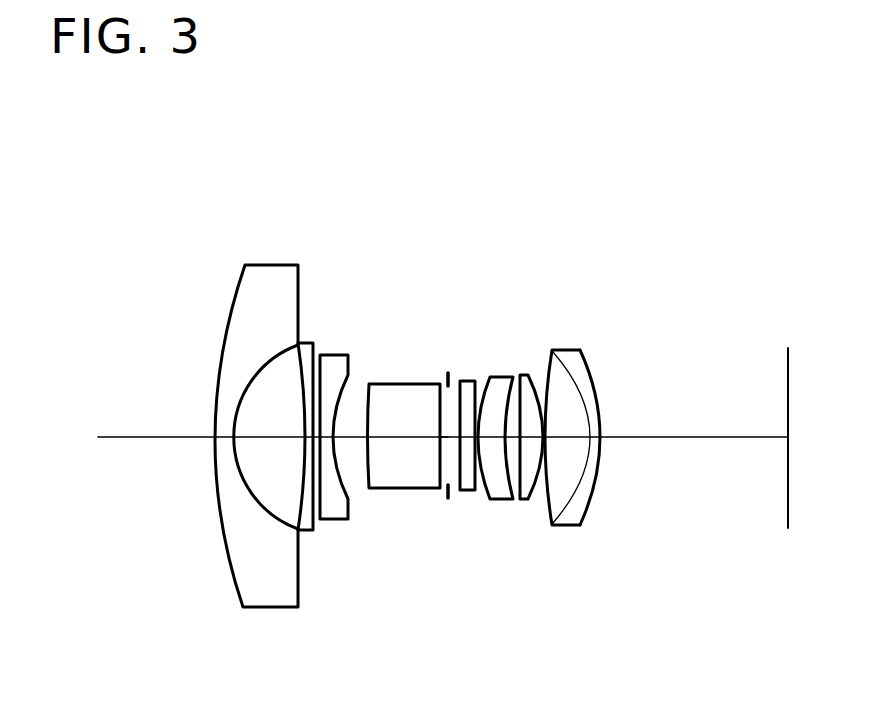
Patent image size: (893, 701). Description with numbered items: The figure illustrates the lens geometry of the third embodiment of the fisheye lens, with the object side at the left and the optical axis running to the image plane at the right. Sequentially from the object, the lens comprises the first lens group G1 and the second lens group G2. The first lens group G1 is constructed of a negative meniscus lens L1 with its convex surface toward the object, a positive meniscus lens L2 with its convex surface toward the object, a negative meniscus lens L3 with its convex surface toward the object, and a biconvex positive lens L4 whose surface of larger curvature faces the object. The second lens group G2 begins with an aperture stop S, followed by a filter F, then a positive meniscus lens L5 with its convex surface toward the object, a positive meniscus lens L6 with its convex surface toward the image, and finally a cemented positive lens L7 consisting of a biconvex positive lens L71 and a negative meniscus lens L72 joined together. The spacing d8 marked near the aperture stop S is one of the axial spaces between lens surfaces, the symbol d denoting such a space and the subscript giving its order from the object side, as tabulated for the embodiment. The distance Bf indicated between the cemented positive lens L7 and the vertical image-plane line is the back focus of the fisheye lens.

The first lens group G1 is at (415, 183).
The second lens group G2 is at (602, 198).
The negative meniscus lens L1 is at (267, 265).
The positive meniscus lens L2 is at (305, 343).
The negative meniscus lens L3 is at (342, 355).
The biconvex positive lens L4 is at (407, 384).
The positive meniscus lens L5 is at (500, 377).
The positive meniscus lens L6 is at (522, 375).
The cemented positive lens L7 is at (587, 343).
The biconvex positive lens L71 is at (553, 505).
The negative meniscus lens L72 is at (568, 525).
The aperture stop S is at (447, 373).
The filter F is at (467, 381).
The space between lens surfaces d8 is at (448, 440).
The back focus Bf is at (680, 437).